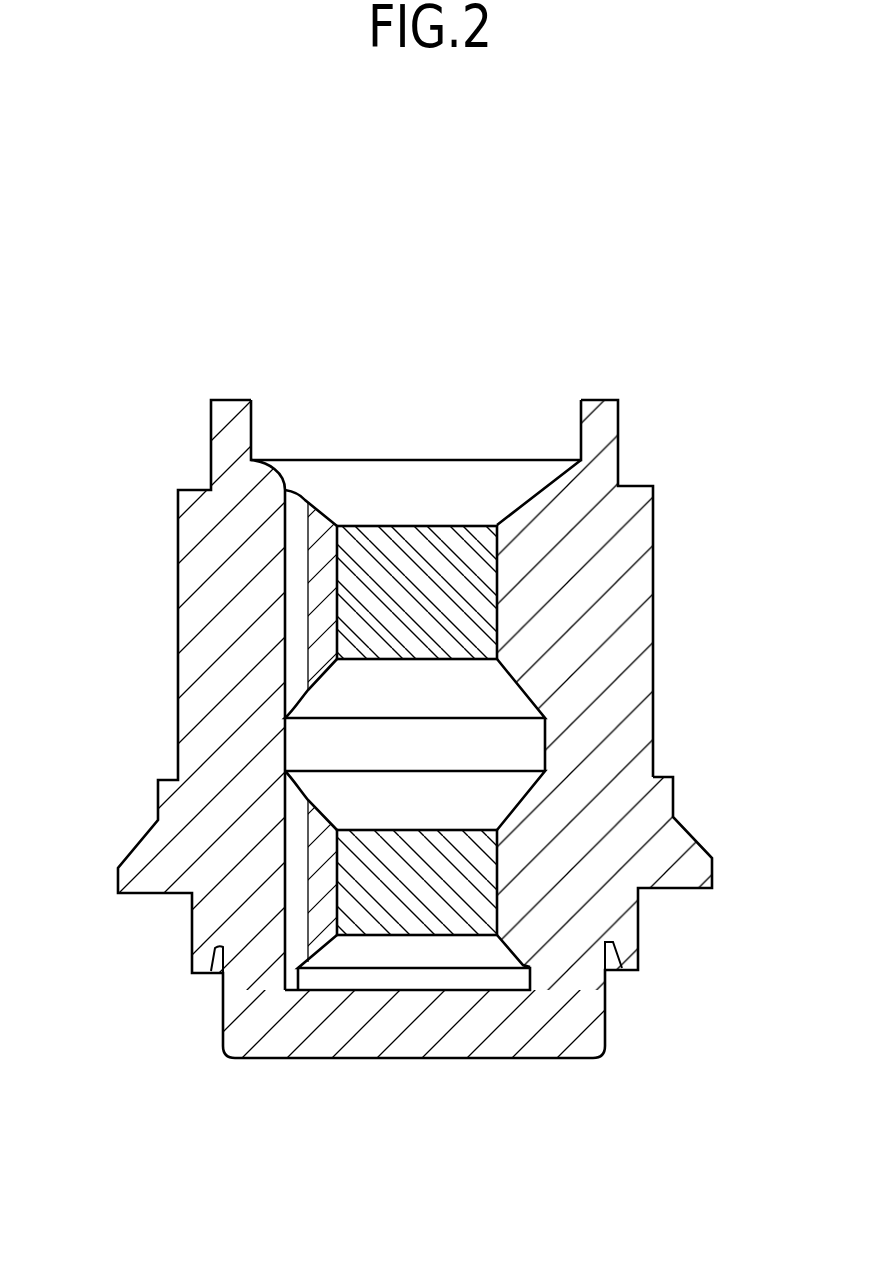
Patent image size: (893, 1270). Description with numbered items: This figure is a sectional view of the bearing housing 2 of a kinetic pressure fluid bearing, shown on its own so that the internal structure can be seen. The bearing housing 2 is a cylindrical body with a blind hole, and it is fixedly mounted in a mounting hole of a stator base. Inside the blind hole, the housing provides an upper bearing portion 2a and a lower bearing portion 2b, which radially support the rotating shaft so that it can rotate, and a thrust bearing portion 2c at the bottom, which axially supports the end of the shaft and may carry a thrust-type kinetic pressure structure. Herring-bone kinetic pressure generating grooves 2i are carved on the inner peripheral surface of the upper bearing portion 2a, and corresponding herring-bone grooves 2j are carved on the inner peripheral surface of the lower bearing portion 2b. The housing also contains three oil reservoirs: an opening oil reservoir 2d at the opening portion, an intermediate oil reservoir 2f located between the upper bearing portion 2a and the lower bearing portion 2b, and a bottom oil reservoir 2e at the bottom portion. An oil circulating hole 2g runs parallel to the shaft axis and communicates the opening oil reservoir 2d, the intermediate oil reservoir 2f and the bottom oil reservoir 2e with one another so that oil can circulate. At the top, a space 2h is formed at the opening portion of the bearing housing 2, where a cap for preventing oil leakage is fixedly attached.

The bearing housing 2 is at (202, 1008).
The upper bearing portion 2a is at (500, 599).
The lower bearing portion 2b is at (500, 880).
The thrust bearing portion 2c is at (420, 990).
The opening oil reservoir 2d is at (540, 470).
The bottom oil reservoir 2e is at (490, 977).
The intermediate oil reservoir 2f is at (535, 740).
The oil circulating hole 2g is at (283, 553).
The space 2h is at (312, 412).
The kinetic pressure generating grooves 2i is at (413, 556).
The kinetic pressure generating grooves 2j is at (382, 935).